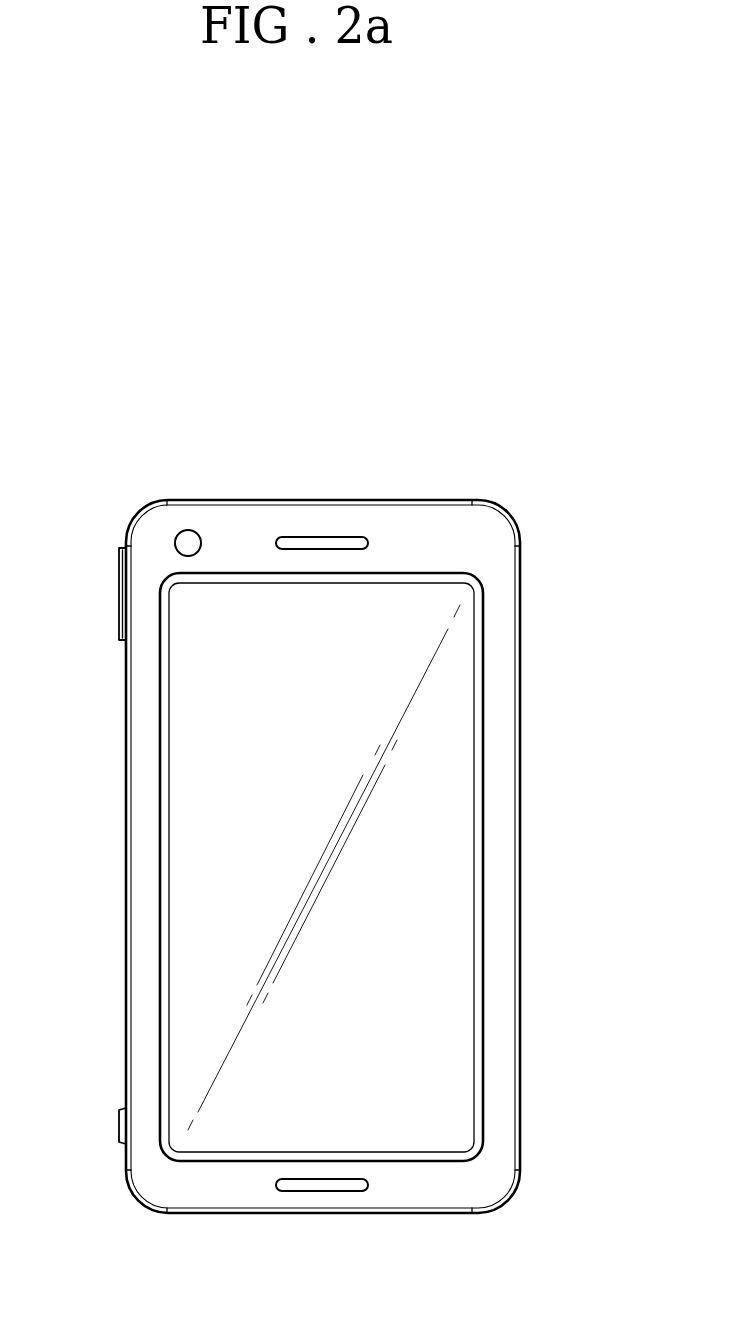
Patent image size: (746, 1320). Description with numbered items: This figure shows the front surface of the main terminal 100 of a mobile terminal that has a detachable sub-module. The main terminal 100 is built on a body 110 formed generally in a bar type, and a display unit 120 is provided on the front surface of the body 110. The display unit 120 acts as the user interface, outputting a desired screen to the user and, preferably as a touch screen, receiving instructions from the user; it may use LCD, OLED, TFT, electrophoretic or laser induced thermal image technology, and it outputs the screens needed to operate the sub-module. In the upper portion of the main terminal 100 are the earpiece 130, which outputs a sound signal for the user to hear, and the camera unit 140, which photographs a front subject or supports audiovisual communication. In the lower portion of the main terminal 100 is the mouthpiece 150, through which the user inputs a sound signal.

The main terminal 100 is at (537, 447).
The body 110 is at (498, 602).
The display unit 120 is at (197, 738).
The earpiece 130 is at (315, 545).
The camera unit 140 is at (188, 542).
The mouthpiece 150 is at (322, 1192).